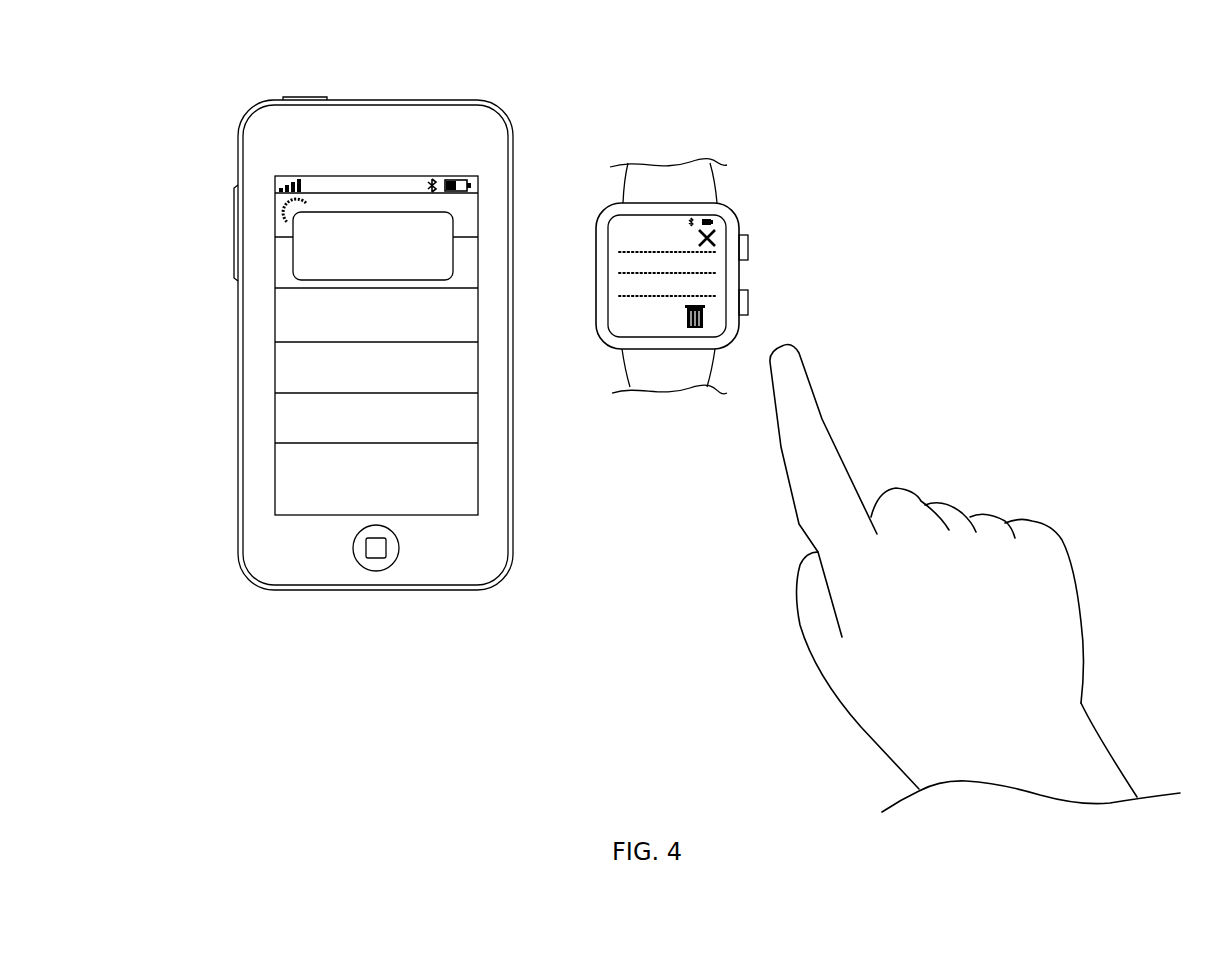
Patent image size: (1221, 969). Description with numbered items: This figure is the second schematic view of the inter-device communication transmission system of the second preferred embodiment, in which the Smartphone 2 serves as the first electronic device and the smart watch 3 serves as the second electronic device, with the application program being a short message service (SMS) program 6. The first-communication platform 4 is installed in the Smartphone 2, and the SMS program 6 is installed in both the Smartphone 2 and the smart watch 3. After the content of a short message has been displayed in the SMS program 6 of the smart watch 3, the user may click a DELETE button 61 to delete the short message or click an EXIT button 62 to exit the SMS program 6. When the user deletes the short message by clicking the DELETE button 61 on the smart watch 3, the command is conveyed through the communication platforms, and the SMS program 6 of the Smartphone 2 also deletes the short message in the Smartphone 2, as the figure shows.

The Smartphone 2 is at (229, 82).
The smart watch 3 is at (604, 90).
The first-communication platform 4 is at (313, 482).
The short message service (SMS) program 6 is at (335, 268).
The DELETE button 61 is at (705, 317).
The EXIT button 62 is at (717, 240).